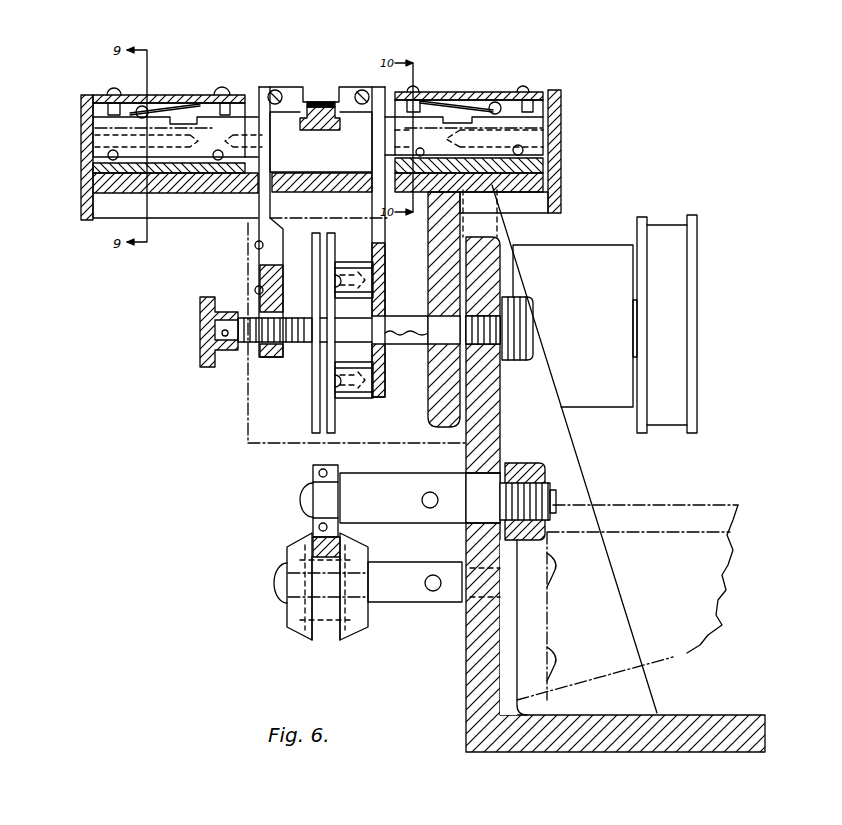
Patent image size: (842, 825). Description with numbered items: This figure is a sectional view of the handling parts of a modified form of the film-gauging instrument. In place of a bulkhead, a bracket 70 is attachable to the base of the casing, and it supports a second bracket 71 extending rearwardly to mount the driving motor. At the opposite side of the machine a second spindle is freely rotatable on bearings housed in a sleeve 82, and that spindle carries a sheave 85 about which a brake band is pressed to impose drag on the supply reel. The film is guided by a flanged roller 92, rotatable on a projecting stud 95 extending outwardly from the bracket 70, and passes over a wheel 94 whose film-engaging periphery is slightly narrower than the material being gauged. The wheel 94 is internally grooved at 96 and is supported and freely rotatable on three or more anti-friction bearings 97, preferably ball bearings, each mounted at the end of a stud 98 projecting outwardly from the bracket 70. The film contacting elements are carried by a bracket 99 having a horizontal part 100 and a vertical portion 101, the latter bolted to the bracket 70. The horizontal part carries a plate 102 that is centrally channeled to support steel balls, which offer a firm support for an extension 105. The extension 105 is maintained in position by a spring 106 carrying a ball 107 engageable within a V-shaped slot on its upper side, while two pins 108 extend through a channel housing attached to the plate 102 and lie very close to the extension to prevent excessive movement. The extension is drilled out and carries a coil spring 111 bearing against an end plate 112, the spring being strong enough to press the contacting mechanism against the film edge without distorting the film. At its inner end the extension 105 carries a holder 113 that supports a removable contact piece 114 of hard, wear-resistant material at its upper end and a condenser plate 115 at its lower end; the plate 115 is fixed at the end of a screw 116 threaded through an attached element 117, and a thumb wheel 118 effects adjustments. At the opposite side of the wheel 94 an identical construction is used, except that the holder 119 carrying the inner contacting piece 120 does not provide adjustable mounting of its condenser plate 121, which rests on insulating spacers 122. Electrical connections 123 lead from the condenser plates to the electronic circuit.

The bracket 70 is at (477, 652).
The second bracket 71 is at (685, 517).
The sleeve 82 is at (600, 392).
The sheave 85 is at (673, 265).
The flanged roller 92 is at (293, 613).
The wheel 94 is at (327, 101).
The projecting stud 95 is at (417, 593).
The internal groove 96 is at (320, 129).
The anti-friction bearing 97 is at (336, 464).
The stud 98 is at (383, 483).
The bracket 99 is at (542, 223).
The horizontal part 100 is at (193, 193).
The vertical portion 101 is at (440, 247).
The plate 102 is at (133, 172).
The extension 105 is at (202, 125).
The spring 106 is at (170, 112).
The ball 107 is at (140, 108).
The pin 108 is at (113, 97).
The coil spring 111 is at (93, 153).
The end plate 112 is at (92, 149).
The holder 113 is at (262, 205).
The contact piece 114 is at (305, 87).
The condenser plate 115 is at (318, 373).
The screw 116 is at (300, 343).
The attached element 117 is at (262, 307).
The thumb wheel 118 is at (212, 367).
The holder 119 is at (380, 226).
The inner contacting piece 120 is at (339, 88).
The condenser plate 121 is at (335, 413).
The insulating spacer 122 is at (352, 262).
The electrical connection 123 is at (402, 338).